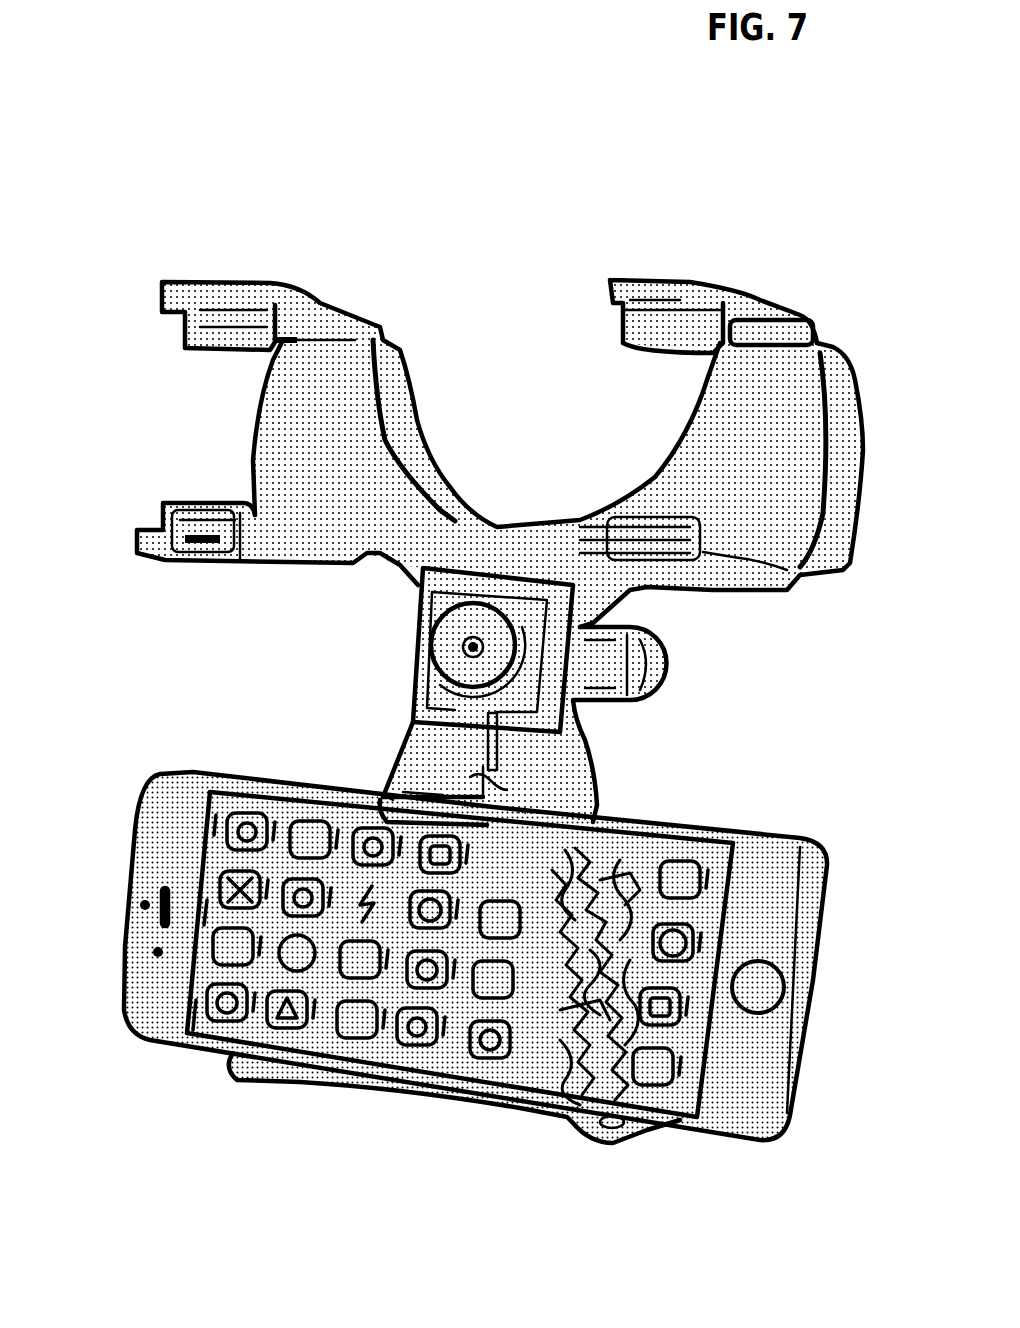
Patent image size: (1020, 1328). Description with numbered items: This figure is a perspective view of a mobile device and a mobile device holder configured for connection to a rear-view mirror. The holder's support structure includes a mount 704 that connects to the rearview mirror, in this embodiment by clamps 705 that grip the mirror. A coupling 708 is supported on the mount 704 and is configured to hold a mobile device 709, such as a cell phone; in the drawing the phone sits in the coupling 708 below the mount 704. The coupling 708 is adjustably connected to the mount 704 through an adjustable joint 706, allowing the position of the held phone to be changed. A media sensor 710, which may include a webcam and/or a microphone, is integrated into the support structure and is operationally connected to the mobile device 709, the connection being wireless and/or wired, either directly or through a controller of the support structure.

The mount 704 is at (270, 453).
The clamps 705 is at (160, 285).
The adjustable joint 706 is at (640, 670).
The coupling 708 is at (572, 1127).
The mobile device 709 is at (767, 908).
The media sensor 710 is at (457, 653).